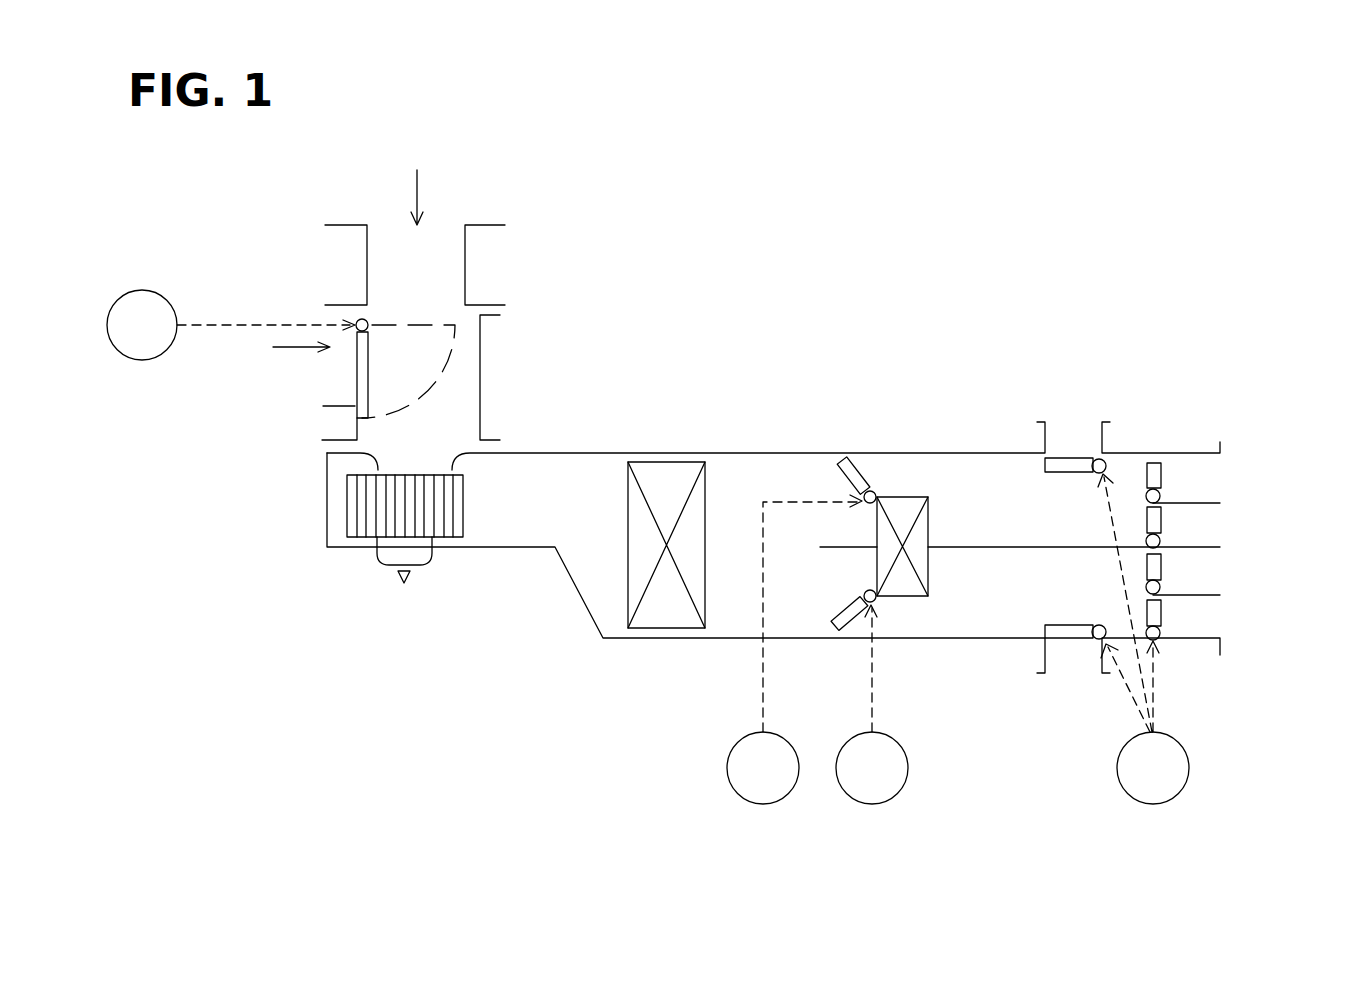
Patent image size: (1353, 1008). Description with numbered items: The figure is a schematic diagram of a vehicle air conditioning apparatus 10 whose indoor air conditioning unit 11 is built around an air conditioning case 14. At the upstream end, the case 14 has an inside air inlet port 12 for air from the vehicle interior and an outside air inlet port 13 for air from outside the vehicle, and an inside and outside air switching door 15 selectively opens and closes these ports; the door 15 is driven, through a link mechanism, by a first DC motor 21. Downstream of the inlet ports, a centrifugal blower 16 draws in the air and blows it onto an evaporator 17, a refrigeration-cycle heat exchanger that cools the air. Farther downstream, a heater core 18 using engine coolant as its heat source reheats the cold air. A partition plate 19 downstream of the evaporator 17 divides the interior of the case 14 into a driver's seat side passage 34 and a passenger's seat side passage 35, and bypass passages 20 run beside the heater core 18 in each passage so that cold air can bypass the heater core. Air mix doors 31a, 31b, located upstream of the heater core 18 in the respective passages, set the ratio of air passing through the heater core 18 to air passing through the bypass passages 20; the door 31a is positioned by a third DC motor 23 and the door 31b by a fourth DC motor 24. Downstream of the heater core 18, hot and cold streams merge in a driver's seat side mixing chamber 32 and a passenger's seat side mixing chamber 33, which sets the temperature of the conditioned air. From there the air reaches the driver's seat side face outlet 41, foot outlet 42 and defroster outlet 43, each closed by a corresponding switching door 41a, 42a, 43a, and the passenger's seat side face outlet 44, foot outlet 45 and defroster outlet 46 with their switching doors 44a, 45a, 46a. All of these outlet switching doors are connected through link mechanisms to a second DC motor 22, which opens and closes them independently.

The vehicle air conditioning apparatus 10 is at (909, 258).
The indoor air conditioning unit 11 is at (683, 434).
The inside air inlet port 12 is at (342, 396).
The outside air inlet port 13 is at (383, 225).
The air conditioning case 14 is at (547, 452).
The inside and outside air switching door 15 is at (356, 374).
The centrifugal blower 16 is at (370, 579).
The evaporator 17 is at (665, 612).
The heater core 18 is at (905, 583).
The partition plate 19 is at (955, 543).
The bypass passages 20 is at (903, 473).
The first DC motor 21 is at (142, 360).
The second DC motor 22 is at (1153, 805).
The third DC motor 23 is at (763, 805).
The fourth DC motor 24 is at (872, 805).
The air mix door 31a is at (837, 477).
The air mix door 31b is at (836, 627).
The driver's seat side mixing chamber 32 is at (998, 475).
The passenger's seat side mixing chamber 33 is at (1003, 608).
The driver's seat side passage 34 is at (828, 515).
The passenger's seat side passage 35 is at (806, 590).
The driver's seat side face outlet 41 is at (1200, 490).
The driver's seat side face outlet switching door 41a is at (1162, 470).
The driver's seat side foot outlet 42 is at (1200, 535).
The driver's seat side foot outlet switching door 42a is at (1162, 515).
The driver's seat side defroster outlet 43 is at (1055, 432).
The driver's seat side defroster outlet switching door 43a is at (1075, 455).
The passenger's seat side face outlet 44 is at (1200, 580).
The outlet switching door 44a is at (1162, 562).
The passenger's seat side foot outlet 45 is at (1200, 625).
The outlet switching door 45a is at (1162, 608).
The passenger's seat side defroster outlet 46 is at (1055, 660).
The outlet switching door 46a is at (1078, 655).